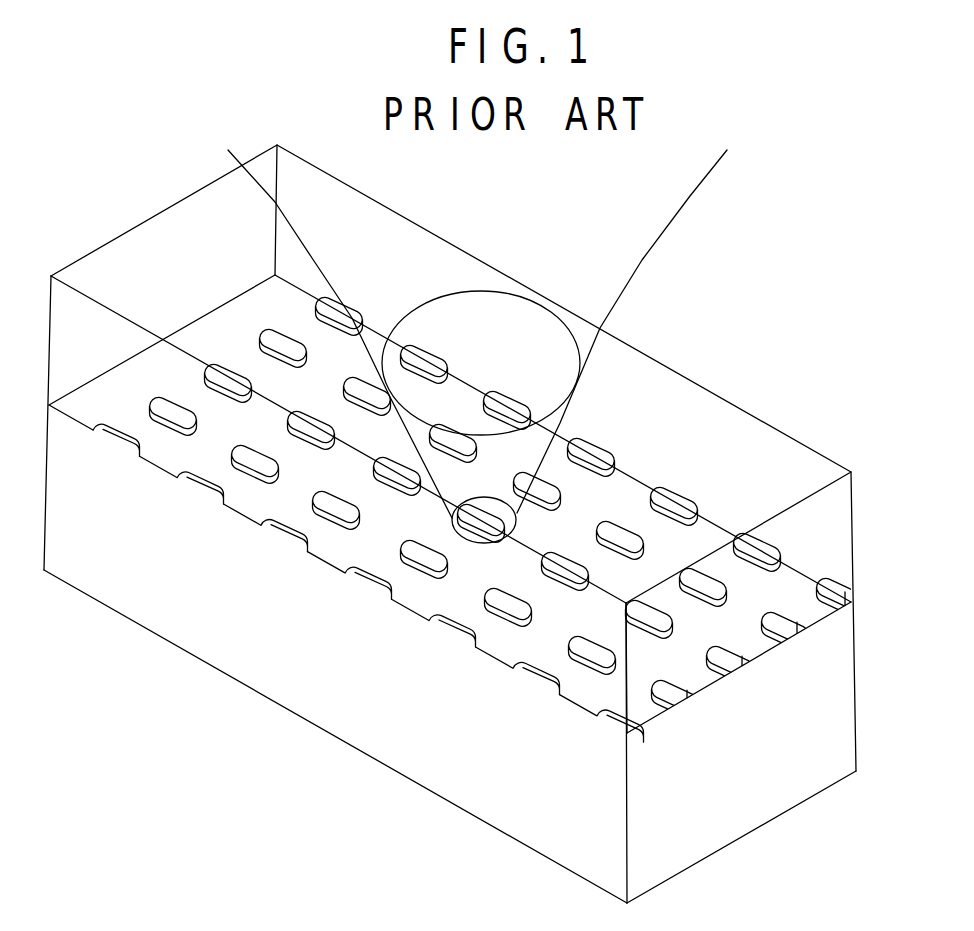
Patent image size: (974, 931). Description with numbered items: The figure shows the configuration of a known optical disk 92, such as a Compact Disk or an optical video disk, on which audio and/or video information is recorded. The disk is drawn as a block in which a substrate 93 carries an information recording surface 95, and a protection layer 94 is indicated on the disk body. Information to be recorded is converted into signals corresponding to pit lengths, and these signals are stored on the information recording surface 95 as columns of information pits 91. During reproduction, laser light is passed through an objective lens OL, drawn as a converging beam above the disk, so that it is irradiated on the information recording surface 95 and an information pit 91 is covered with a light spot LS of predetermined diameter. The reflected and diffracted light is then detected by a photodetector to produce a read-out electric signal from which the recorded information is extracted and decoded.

The information pits 91 is at (617, 519).
The optical disk 92 is at (717, 345).
The substrate 93 is at (773, 433).
The protection layer 94 is at (843, 713).
The information recording surface 95 is at (793, 586).
The objective lens OL is at (580, 327).
The light spot LS is at (478, 543).